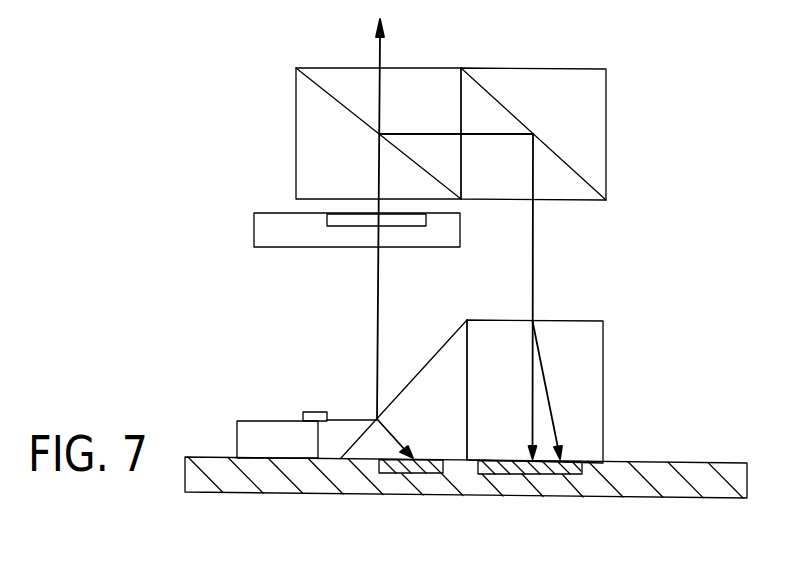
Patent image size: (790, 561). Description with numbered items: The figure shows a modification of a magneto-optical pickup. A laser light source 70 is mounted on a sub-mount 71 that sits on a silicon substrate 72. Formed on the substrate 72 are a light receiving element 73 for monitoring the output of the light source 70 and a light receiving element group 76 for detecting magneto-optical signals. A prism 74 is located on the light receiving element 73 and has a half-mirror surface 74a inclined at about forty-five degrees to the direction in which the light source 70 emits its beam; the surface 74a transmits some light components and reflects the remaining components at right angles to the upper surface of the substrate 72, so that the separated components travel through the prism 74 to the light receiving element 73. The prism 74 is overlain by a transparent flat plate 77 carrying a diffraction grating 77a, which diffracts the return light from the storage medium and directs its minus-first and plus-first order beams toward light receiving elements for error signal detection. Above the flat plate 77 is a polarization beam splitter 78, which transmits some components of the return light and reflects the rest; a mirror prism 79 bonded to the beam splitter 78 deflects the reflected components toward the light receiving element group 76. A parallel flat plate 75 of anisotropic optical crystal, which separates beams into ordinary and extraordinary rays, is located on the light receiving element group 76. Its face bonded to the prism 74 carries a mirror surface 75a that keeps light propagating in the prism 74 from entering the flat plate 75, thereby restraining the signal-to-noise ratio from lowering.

The laser light source 70 is at (316, 412).
The sub-mount 71 is at (256, 421).
The silicon substrate 72 is at (190, 457).
The light receiving element 73 is at (408, 475).
The prism 74 is at (404, 370).
The half-mirror surface 74a is at (408, 383).
The parallel flat plate 75 is at (586, 320).
The mirror surface 75a is at (467, 334).
The light receiving element group 76 is at (543, 475).
The transparent flat plate 77 is at (266, 212).
The diffraction grating 77a is at (426, 219).
The polarization beam splitter 78 is at (321, 68).
The mirror prism 79 is at (549, 68).